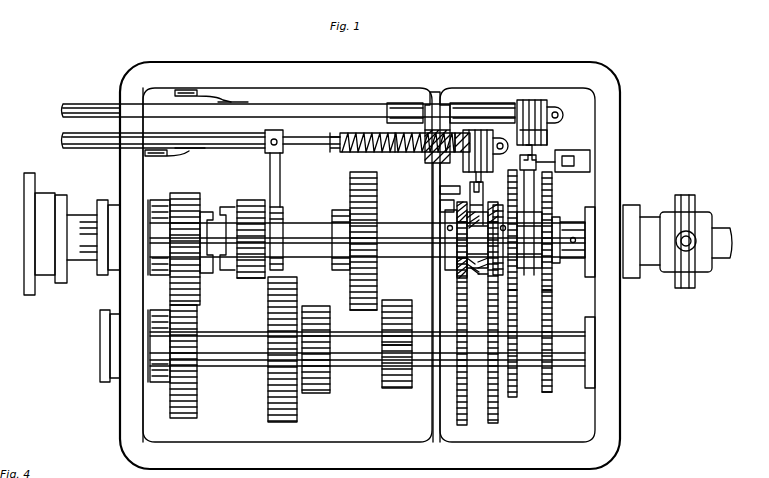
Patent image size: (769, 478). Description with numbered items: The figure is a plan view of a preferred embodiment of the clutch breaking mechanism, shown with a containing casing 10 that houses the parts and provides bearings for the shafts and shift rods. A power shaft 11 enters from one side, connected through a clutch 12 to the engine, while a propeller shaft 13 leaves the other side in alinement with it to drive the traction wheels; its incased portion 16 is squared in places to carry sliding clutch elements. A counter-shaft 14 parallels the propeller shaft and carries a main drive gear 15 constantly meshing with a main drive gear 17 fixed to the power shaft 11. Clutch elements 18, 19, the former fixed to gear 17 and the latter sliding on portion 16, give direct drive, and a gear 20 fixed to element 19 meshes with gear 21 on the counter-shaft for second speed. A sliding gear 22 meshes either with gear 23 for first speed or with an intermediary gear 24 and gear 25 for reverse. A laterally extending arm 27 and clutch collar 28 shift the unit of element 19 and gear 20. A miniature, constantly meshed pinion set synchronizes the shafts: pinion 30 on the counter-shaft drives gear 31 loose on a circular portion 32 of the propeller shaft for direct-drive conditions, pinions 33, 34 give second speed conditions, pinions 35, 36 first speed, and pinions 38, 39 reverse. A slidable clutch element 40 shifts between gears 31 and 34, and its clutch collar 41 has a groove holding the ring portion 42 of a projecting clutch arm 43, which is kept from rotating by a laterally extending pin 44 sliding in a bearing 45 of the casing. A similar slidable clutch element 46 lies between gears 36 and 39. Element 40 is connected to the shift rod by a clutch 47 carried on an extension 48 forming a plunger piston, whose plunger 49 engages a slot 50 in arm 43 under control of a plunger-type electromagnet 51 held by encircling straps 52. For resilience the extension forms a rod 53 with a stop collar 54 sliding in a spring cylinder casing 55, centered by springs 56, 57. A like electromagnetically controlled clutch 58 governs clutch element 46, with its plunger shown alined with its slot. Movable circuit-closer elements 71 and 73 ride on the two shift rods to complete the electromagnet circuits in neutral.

The containing casing 10 is at (615, 415).
The power shaft 11 is at (84, 244).
The clutch 12 is at (50, 262).
The propeller shaft 13 is at (712, 228).
The counter-shaft 14 is at (240, 363).
The main drive gear 15 is at (197, 407).
The incased portion of the propeller shaft 16 is at (300, 228).
The main drive gear 17 is at (185, 194).
The clutch element 18 is at (207, 212).
The clutch element 19 is at (226, 207).
The gear 20 is at (248, 200).
The gear 21 is at (268, 297).
The gear 22 is at (378, 206).
The gear 23 is at (325, 393).
The intermediary gear 24 is at (396, 300).
The gear 25 is at (400, 388).
The laterally extending arm 27 is at (281, 170).
The clutch collar 28 is at (284, 216).
The pinion 30 is at (462, 425).
The gear 31 is at (457, 214).
The circular portion of the propeller shaft 32 is at (445, 232).
The pinion 33 is at (493, 423).
The pinion 34 is at (498, 205).
The pinion 35 is at (514, 397).
The pinion 36 is at (514, 178).
The pinion 38 is at (552, 300).
The pinion 39 is at (552, 188).
The slidable clutch element 40 is at (480, 280).
The clutch collar 41 is at (476, 276).
The ring portion 42 is at (462, 272).
The projecting clutch arm 43 is at (484, 192).
The laterally extending pin 44 is at (452, 190).
The bearing 45 is at (568, 160).
The slidable clutch element 46 is at (529, 276).
The clutch 47 is at (482, 176).
The extension 48 is at (320, 124).
The plunger 49 is at (474, 170).
The slot 50 is at (536, 160).
The electromagnet 51 is at (466, 176).
The encircling straps 52 is at (540, 110).
The rod 53 is at (310, 134).
The stop collar 54 is at (404, 152).
The spring cylinder casing 55 is at (332, 154).
The centering spring 56 is at (364, 152).
The centering spring 57 is at (427, 150).
The electromagnetically controlled clutch 58 is at (548, 138).
The movable element 71 is at (198, 152).
The movable element 73 is at (233, 98).